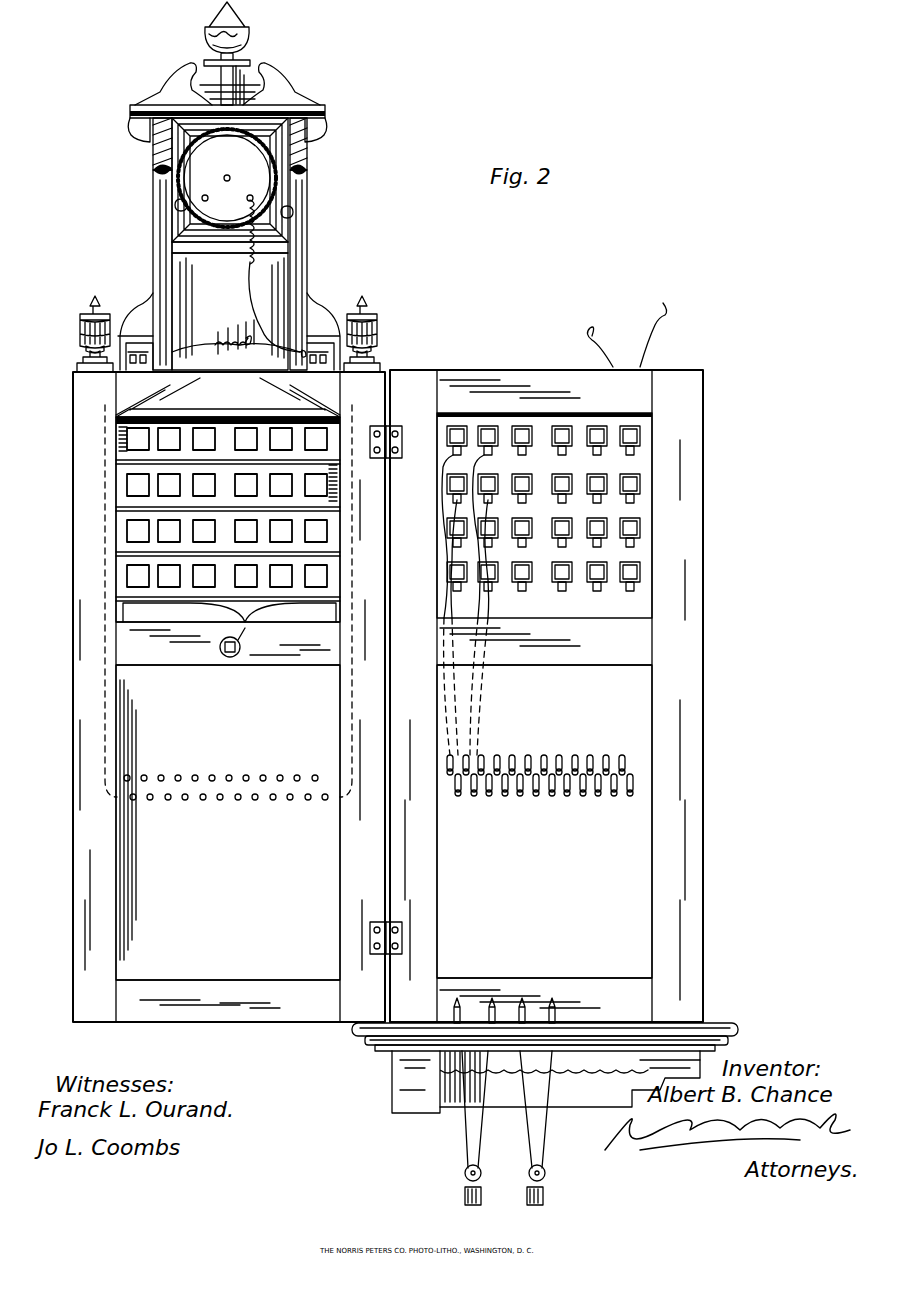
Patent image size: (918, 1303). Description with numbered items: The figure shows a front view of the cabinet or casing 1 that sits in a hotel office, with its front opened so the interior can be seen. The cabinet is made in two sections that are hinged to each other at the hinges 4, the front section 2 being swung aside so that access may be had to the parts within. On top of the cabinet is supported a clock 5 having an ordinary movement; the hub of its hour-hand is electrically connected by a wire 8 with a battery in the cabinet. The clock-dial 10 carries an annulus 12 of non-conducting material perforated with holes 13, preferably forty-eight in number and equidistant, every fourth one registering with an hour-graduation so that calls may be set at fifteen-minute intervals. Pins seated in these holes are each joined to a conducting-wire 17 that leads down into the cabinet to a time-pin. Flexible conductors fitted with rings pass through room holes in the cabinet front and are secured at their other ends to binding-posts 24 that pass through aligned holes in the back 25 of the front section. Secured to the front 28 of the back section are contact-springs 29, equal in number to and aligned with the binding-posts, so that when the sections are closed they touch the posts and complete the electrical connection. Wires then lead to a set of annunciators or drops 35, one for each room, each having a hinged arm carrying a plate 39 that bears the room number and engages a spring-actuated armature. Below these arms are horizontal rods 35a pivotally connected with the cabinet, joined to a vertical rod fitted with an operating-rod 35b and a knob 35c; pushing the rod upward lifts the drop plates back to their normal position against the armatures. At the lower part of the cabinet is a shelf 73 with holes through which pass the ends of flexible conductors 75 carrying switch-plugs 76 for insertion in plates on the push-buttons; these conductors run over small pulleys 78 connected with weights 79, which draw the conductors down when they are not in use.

The cabinet or casing 1 is at (212, 697).
The front section 2 is at (555, 662).
The hinge 4 is at (379, 678).
The clock 5 is at (230, 311).
The wire 8 is at (239, 309).
The clock-dial 10 is at (227, 178).
The annulus 12 is at (156, 185).
The holes 13 is at (178, 200).
The conducting-wire 17 is at (182, 226).
The binding-posts 24 is at (226, 789).
The back 25 is at (228, 822).
The front 28 is at (544, 821).
The contact-springs 29 is at (540, 774).
The annunciators or drops 35 is at (557, 586).
The horizontal rods 35a is at (184, 613).
The operating-rod 35b is at (332, 613).
The knob 35c is at (232, 658).
The plate 39 is at (562, 428).
The shelf 73 is at (607, 1023).
The flexible conductors 75 is at (466, 1134).
The switch-plugs 76 is at (462, 1013).
The pulleys 78 is at (465, 1174).
The weights 79 is at (558, 1195).